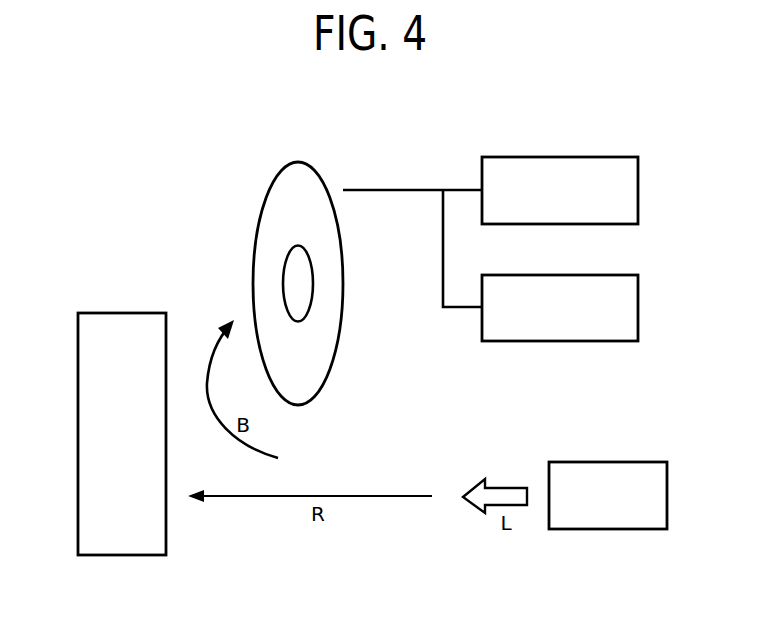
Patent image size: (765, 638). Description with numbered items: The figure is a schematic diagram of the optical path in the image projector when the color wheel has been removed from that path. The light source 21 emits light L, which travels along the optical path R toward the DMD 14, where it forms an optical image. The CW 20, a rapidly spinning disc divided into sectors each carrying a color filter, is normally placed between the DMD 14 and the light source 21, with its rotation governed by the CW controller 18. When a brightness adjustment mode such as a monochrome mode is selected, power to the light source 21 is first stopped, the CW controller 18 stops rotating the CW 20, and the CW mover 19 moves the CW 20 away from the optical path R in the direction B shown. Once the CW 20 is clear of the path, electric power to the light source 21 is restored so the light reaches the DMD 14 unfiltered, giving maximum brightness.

The DMD 14 is at (103, 312).
The CW controller 18 is at (513, 157).
The CW mover 19 is at (513, 275).
The CW 20 is at (290, 162).
The light source 21 is at (580, 462).